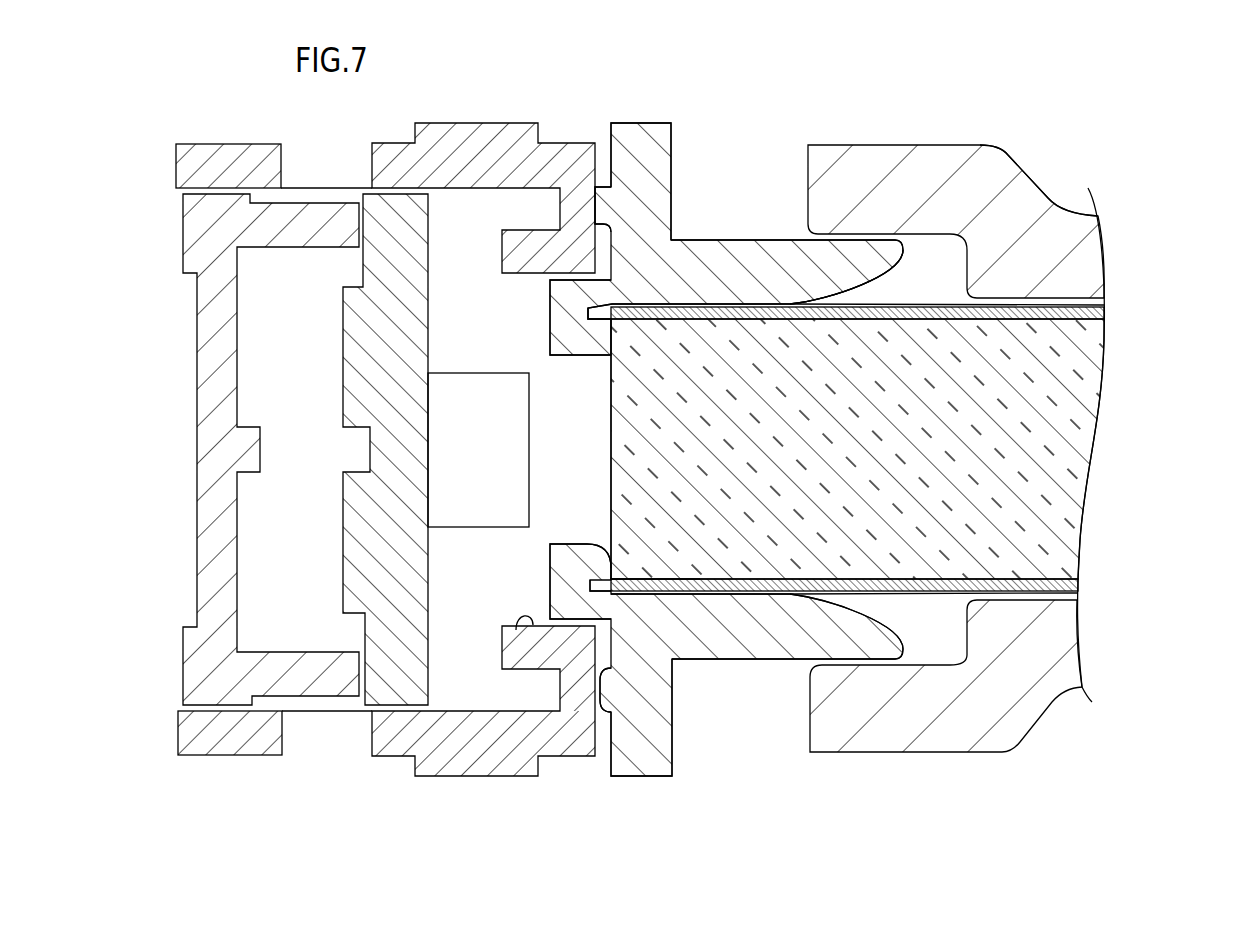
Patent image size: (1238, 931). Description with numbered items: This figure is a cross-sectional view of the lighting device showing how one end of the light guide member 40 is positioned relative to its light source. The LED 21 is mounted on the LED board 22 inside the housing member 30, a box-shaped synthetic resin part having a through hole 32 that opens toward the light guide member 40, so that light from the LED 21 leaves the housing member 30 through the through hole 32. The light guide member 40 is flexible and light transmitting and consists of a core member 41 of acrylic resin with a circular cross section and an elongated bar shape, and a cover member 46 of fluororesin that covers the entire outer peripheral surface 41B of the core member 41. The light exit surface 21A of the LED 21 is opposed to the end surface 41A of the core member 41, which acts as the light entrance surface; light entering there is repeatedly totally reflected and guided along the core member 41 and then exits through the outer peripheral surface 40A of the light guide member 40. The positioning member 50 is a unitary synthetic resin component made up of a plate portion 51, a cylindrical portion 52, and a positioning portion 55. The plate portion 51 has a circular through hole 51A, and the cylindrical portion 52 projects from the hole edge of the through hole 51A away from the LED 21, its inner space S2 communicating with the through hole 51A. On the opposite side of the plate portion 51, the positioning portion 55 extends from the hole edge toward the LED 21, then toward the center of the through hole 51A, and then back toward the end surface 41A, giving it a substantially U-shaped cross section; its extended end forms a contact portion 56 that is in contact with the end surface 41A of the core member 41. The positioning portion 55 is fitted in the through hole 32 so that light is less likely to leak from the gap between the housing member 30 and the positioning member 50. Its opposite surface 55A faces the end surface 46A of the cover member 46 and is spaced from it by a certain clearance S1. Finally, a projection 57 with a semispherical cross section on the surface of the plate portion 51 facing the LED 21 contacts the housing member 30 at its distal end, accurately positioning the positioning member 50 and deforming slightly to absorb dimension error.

The housing member 30 is at (214, 128).
The LED 21 is at (454, 513).
The light exit surface 21A is at (530, 499).
The LED board 22 is at (345, 578).
The through hole 32 is at (516, 630).
The positioning member 50 is at (687, 106).
The plate portion 51 is at (636, 150).
The through hole 51A is at (645, 572).
The cylindrical portion 52 is at (751, 263).
The positioning portion 55 is at (572, 604).
The opposite surface 55A is at (612, 303).
The contact portion 56 is at (672, 660).
The projection 57 is at (598, 212).
The clearance S1 is at (603, 578).
The inner space S2 is at (751, 307).
The light guide member 40 is at (1154, 483).
The outer peripheral surface 40A is at (933, 308).
The core member 41 is at (1018, 478).
The end surface 41A is at (610, 443).
The outer peripheral surface 41B is at (1050, 304).
The cover member 46 is at (1030, 578).
The end surface 46A is at (609, 318).